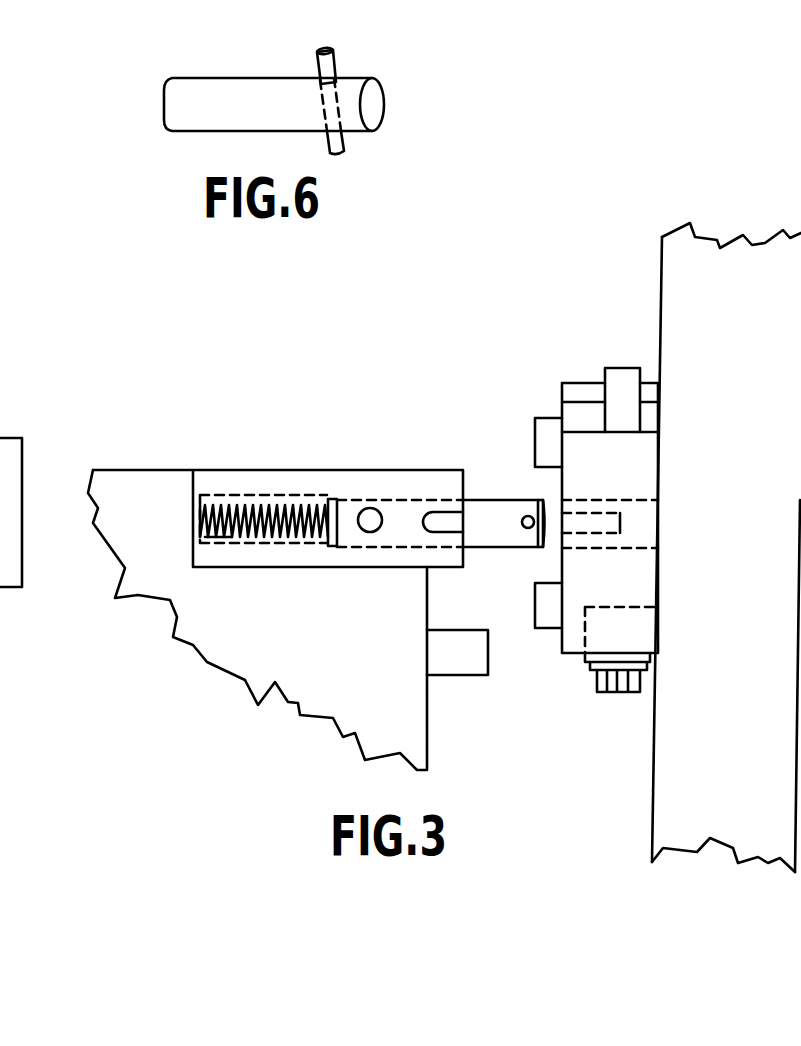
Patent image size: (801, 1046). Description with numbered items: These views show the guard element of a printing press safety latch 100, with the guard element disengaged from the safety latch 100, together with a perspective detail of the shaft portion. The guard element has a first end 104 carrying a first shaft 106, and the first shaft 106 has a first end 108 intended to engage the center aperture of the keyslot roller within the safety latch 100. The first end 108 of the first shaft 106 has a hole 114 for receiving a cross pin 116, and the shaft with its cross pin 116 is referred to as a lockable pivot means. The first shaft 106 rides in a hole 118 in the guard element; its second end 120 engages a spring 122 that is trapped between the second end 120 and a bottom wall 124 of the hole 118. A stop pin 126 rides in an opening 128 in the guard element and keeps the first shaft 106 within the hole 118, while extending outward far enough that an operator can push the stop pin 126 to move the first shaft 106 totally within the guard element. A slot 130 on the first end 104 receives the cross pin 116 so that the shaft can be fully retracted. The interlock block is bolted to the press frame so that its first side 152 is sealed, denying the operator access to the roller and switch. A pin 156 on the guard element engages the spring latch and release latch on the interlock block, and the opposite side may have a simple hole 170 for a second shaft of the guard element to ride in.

In FIG. 3, the safety latch 100 is at (623, 368).
In FIG. 3, the first end 104 is at (445, 470).
In FIG. 6, the first shaft 106 is at (210, 131).
In FIG. 3, the first shaft 106 is at (478, 499).
In FIG. 6, the first end 108 is at (381, 128).
In FIG. 3, the first end 108 is at (545, 502).
In FIG. 6, the hole 114 is at (342, 100).
In FIG. 3, the hole 114 is at (538, 497).
In FIG. 6, the cross pin 116 is at (318, 50).
In FIG. 3, the cross pin 116 is at (528, 529).
In FIG. 3, the hole 118 is at (220, 497).
In FIG. 3, the second end 120 is at (363, 532).
In FIG. 3, the spring 122 is at (224, 538).
In FIG. 3, the bottom wall 124 is at (199, 522).
In FIG. 3, the stop pin 126 is at (358, 515).
In FIG. 3, the opening 128 is at (312, 507).
In FIG. 3, the slot 130 is at (460, 522).
In FIG. 3, the first side 152 is at (657, 580).
In FIG. 3, the pin 156 is at (440, 676).
In FIG. 3, the hole 170 is at (660, 268).